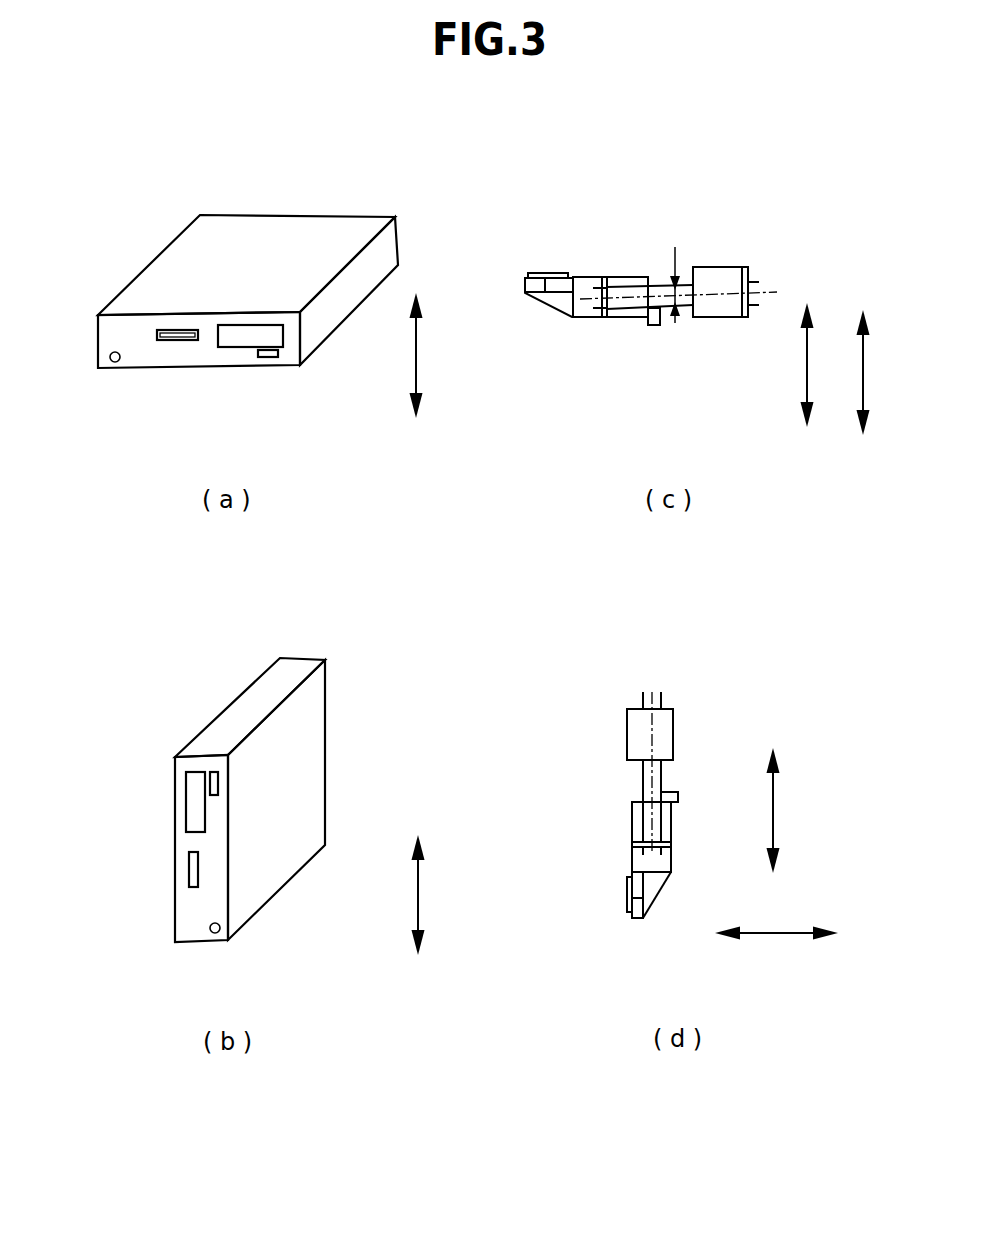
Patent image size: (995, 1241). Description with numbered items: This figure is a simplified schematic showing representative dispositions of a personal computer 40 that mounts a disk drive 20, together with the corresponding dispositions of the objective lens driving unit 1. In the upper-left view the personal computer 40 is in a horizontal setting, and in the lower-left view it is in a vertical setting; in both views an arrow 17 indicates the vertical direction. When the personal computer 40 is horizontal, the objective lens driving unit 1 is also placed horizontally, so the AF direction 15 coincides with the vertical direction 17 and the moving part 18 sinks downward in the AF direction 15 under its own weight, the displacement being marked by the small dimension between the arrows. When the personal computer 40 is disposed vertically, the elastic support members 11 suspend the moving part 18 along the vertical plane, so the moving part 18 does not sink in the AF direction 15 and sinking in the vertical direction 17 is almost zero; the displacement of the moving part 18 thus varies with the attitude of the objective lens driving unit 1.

The objective lens driving unit 1 is at (658, 414).
The elastic support members 11 is at (757, 305).
The AF direction 15 is at (781, 621).
The vertical direction 17 is at (656, 624).
The moving part 18 is at (562, 298).
The disk drive 20 is at (270, 333).
The personal computer 40 is at (223, 464).